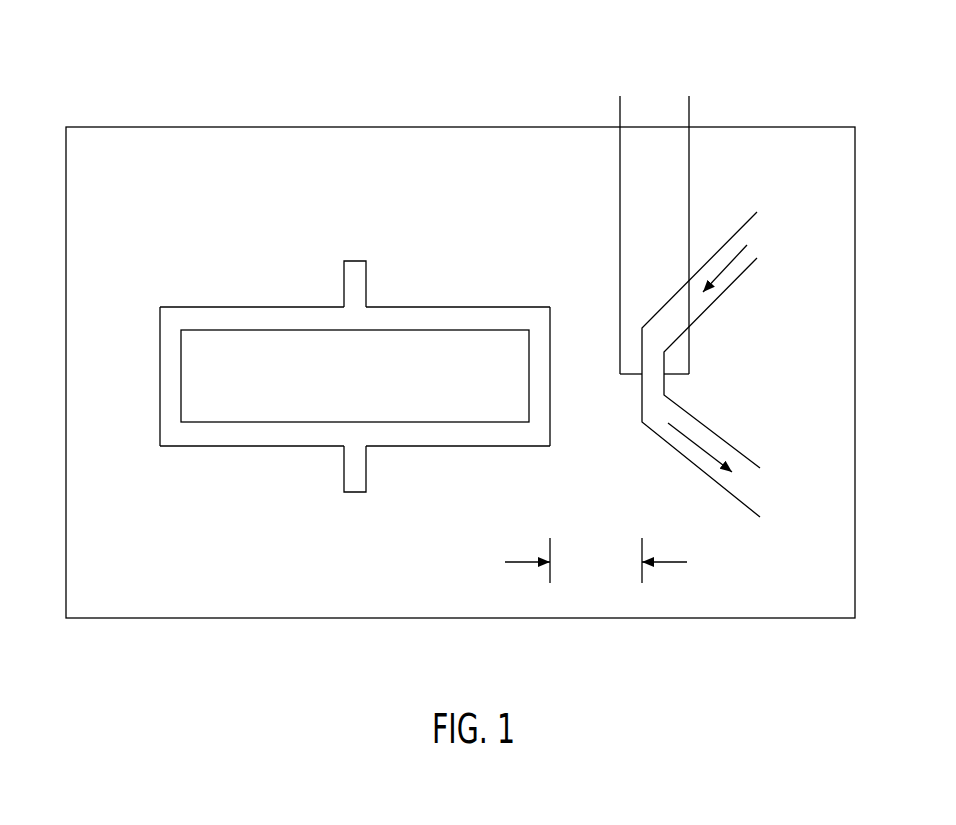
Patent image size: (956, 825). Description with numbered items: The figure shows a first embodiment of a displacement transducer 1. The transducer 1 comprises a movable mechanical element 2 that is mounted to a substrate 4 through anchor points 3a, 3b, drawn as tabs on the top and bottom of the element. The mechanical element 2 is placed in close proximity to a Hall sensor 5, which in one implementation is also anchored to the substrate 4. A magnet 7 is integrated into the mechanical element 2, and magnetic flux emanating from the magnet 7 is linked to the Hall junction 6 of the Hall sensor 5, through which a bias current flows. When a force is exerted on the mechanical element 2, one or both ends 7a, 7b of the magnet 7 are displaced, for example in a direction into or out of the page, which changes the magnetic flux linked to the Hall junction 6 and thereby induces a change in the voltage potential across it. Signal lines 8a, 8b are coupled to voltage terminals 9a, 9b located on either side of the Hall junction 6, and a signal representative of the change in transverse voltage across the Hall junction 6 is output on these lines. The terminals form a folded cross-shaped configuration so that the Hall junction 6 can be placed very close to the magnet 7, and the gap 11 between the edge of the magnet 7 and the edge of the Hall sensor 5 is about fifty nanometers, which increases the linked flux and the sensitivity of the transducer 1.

The displacement transducer 1 is at (460, 322).
The movable mechanical element 2 is at (354, 375).
The anchor point 3a is at (311, 245).
The anchor point 3b is at (308, 506).
The substrate 4 is at (106, 176).
The Hall sensor 5 is at (658, 232).
The Hall junction 6 is at (713, 364).
The magnet 7 is at (388, 411).
The end of the magnet 7a is at (586, 375).
The end of the magnet 7b is at (122, 374).
The signal line 8a is at (570, 235).
The signal line 8b is at (742, 235).
The voltage terminal 9a is at (601, 403).
The voltage terminal 9b is at (721, 403).
The gap 11 is at (596, 560).